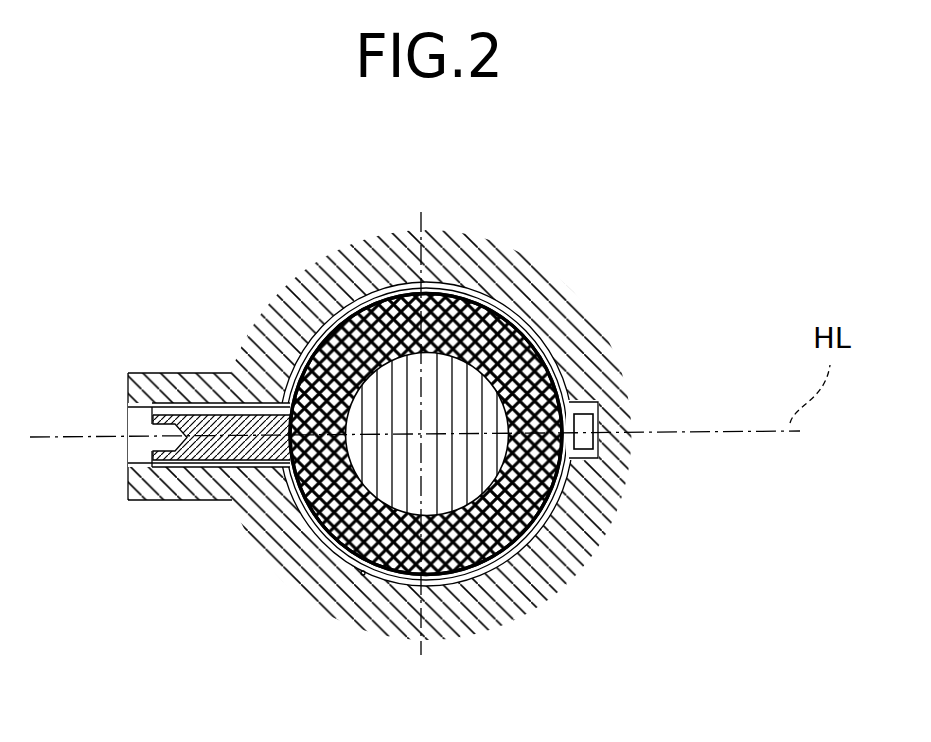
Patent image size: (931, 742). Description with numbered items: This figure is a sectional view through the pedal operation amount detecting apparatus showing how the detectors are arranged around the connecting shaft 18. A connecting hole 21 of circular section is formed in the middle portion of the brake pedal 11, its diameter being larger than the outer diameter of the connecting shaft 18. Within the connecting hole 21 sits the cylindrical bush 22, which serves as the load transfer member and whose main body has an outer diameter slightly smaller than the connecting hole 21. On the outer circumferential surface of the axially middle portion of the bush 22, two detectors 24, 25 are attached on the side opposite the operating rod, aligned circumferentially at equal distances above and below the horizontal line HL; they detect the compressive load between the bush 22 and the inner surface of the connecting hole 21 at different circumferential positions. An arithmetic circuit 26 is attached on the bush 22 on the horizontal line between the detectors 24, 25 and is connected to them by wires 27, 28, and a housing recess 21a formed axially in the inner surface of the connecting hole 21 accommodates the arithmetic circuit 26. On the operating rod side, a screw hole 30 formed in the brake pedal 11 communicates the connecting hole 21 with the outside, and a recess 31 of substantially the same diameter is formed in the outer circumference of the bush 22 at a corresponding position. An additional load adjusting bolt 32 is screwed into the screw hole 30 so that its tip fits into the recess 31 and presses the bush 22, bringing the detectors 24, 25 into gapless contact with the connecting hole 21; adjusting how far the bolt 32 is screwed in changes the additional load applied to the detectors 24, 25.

The brake pedal 11 is at (598, 318).
The connecting shaft 18 is at (448, 462).
The connecting hole 21 is at (365, 572).
The housing recess 21a is at (603, 411).
The bush 22 is at (472, 318).
The detector 24 is at (530, 331).
The detector 25 is at (535, 533).
The arithmetic circuit 26 is at (585, 443).
The wire 27 is at (560, 378).
The wire 28 is at (555, 503).
The screw hole 30 is at (145, 466).
The recess 31 is at (280, 463).
The additional load adjusting bolt 32 is at (212, 427).